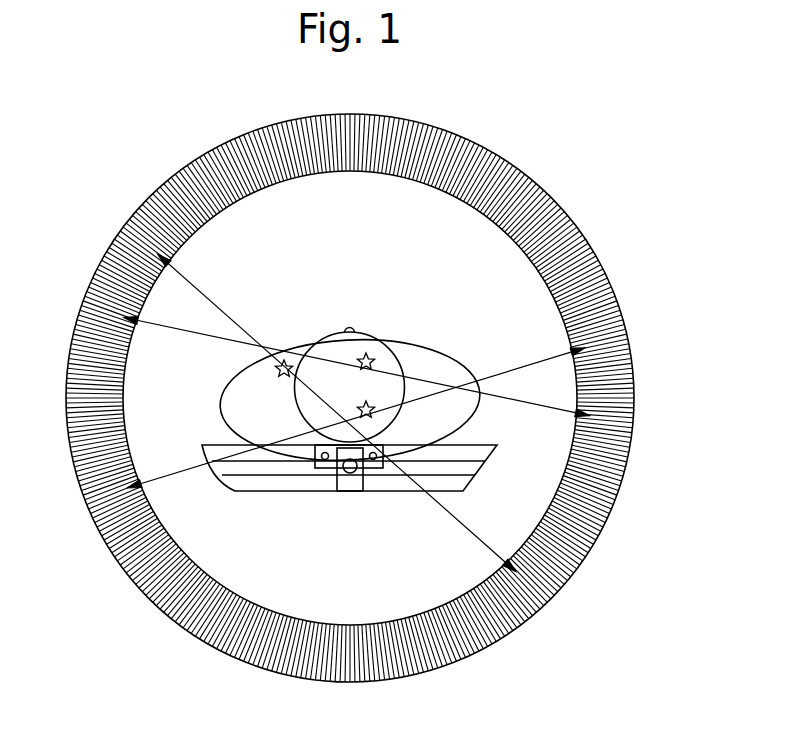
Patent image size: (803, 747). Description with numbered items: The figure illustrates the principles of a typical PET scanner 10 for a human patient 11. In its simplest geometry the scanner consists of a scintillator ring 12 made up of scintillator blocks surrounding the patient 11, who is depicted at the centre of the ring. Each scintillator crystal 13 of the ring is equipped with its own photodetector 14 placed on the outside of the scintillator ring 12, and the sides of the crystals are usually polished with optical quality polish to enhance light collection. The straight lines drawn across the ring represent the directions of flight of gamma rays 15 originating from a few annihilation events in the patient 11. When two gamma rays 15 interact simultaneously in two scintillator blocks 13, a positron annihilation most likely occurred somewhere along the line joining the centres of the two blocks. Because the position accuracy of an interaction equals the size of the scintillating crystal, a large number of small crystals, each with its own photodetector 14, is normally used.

The PET scanner 10 is at (140, 160).
The human patient 11 is at (424, 357).
The scintillator ring 12 is at (487, 145).
The scintillator crystal 13 is at (528, 263).
The photodetector 14 is at (578, 228).
The gamma rays 15 is at (525, 367).